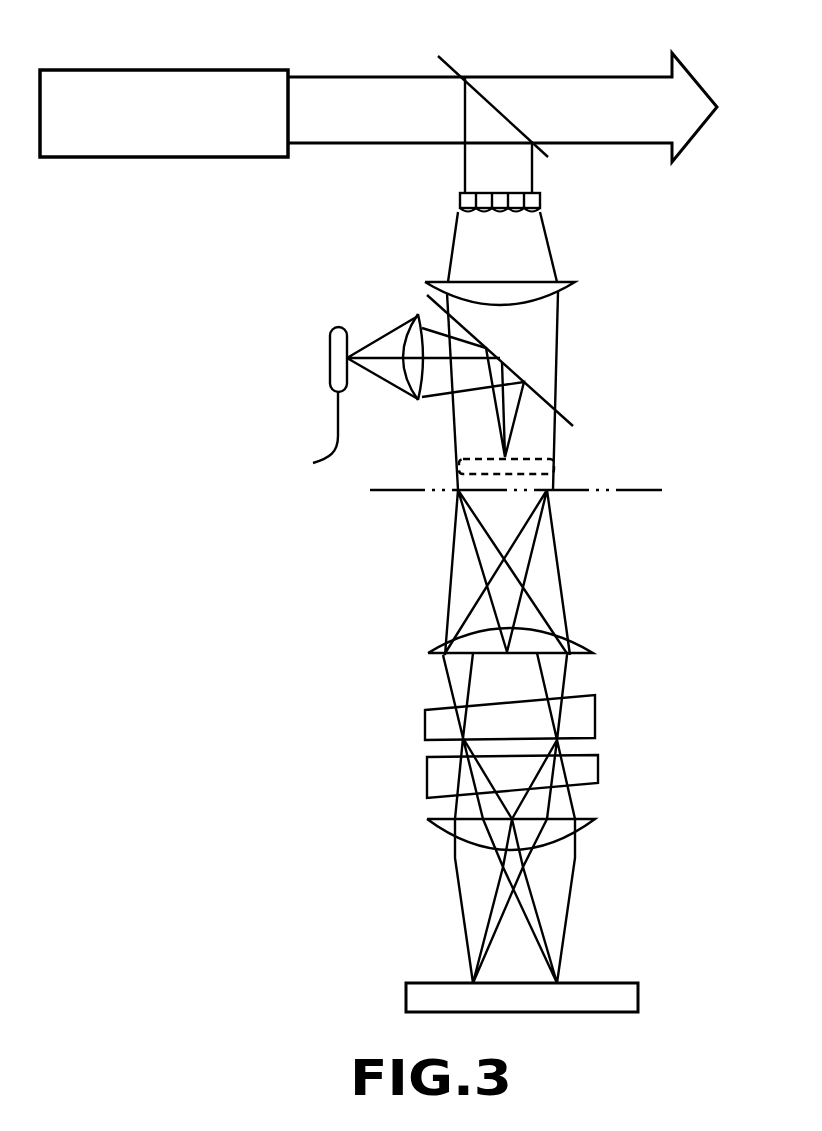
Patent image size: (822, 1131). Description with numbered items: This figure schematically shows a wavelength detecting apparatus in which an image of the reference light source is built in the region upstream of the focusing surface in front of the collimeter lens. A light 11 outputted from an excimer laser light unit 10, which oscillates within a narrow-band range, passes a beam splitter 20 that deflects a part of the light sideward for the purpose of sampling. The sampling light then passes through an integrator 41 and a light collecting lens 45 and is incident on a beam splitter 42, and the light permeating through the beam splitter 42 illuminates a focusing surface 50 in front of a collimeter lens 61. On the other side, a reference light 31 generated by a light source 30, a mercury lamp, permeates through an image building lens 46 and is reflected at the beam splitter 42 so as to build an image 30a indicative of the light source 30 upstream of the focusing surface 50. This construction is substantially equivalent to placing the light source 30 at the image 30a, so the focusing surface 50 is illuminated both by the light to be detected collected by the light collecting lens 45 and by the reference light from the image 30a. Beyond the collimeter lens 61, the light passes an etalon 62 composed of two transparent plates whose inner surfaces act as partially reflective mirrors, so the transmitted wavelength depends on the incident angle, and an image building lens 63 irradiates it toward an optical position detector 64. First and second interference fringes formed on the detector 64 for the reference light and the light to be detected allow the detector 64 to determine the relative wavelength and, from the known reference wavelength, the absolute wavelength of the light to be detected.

The excimer laser light unit 10 is at (264, 69).
The light 11 is at (373, 76).
The beam splitter 20 is at (494, 107).
The integrator 41 is at (533, 192).
The light collecting lens 45 is at (570, 281).
The light source 30 is at (330, 341).
The reference light 31 is at (375, 342).
The image building lens 46 is at (417, 400).
The beam splitter 42 is at (549, 404).
The image indicative of the light source 30a is at (545, 459).
The focusing surface 50 is at (641, 491).
The collimeter lens 61 is at (586, 652).
The etalon 62 is at (608, 695).
The image building lens 63 is at (592, 819).
The optical position detector 64 is at (626, 982).